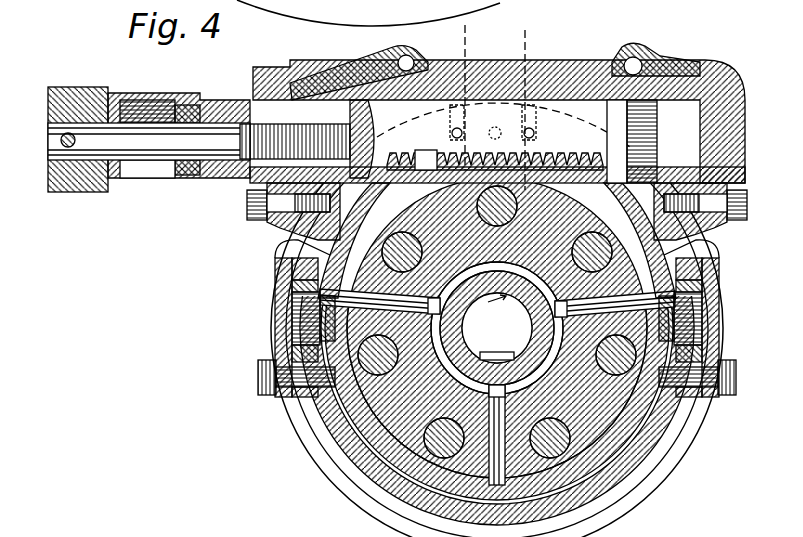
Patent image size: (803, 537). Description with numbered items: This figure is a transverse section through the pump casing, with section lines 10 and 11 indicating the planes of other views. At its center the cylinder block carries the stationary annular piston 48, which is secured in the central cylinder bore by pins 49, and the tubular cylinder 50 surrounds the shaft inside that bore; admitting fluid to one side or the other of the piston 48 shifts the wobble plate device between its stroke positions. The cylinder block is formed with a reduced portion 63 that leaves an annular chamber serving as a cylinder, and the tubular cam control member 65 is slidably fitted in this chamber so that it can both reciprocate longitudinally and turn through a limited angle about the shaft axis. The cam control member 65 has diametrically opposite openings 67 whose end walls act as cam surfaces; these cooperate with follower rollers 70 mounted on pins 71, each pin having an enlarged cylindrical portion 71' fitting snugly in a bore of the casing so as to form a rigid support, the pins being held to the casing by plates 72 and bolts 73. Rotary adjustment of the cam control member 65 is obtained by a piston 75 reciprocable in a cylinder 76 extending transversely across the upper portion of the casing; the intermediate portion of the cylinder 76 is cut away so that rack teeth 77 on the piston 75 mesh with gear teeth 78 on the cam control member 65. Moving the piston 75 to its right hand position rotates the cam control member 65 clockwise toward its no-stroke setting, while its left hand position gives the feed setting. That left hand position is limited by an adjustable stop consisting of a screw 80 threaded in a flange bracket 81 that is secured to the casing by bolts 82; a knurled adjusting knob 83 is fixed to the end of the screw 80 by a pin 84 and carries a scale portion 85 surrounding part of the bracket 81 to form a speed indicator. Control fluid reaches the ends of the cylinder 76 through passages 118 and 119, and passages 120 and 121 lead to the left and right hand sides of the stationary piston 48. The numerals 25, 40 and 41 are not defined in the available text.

The section line 10 is at (470, 37).
The section line 11 is at (512, 27).
The worm wheel 25 is at (357, 450).
The shaft 40 is at (497, 328).
The key 41 is at (499, 340).
The stationary annular piston 48 is at (570, 372).
The pins 49 is at (700, 255).
The tubular cylinder 50 is at (590, 318).
The reduced portion 63 is at (562, 516).
The tubular cam control member 65 is at (370, 492).
The openings 67 is at (303, 435).
The rollers 70 is at (278, 278).
The pins 71 is at (493, 318).
The enlarged cylindrical portions 71' is at (494, 324).
The plates 72 is at (300, 290).
The bolts 73 is at (262, 380).
The piston 75 is at (655, 150).
The cylinder 76 is at (574, 100).
The rack teeth 77 is at (392, 158).
The gear teeth 78 is at (573, 165).
The screw 80 is at (220, 180).
The flange bracket 81 is at (212, 103).
The bolts 82 is at (248, 208).
The knurled adjusting knob 83 is at (72, 193).
The pin 84 is at (61, 139).
The scale portion 85 is at (180, 185).
The passage 118 is at (348, 78).
The passage 119 is at (655, 70).
The passage 120 is at (424, 155).
The passage 121 is at (540, 152).